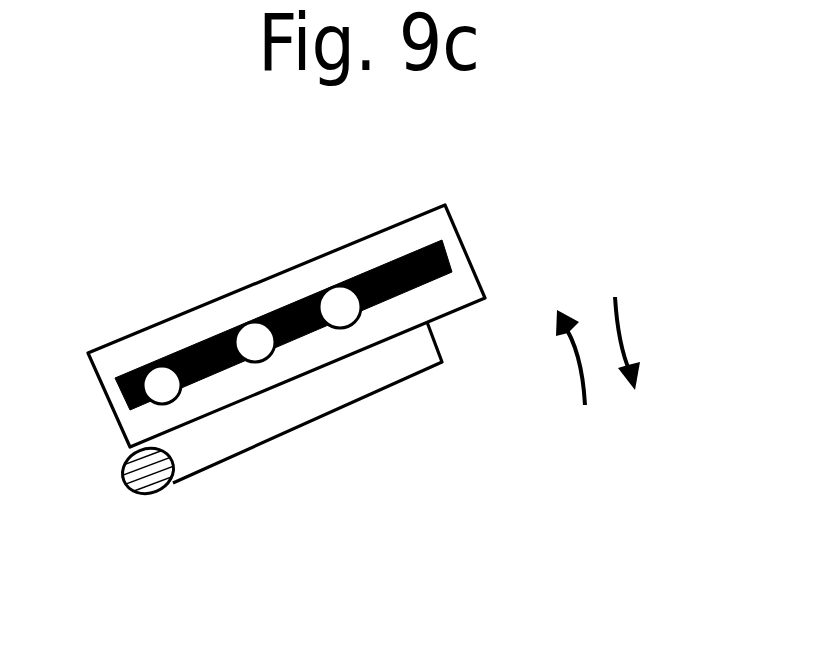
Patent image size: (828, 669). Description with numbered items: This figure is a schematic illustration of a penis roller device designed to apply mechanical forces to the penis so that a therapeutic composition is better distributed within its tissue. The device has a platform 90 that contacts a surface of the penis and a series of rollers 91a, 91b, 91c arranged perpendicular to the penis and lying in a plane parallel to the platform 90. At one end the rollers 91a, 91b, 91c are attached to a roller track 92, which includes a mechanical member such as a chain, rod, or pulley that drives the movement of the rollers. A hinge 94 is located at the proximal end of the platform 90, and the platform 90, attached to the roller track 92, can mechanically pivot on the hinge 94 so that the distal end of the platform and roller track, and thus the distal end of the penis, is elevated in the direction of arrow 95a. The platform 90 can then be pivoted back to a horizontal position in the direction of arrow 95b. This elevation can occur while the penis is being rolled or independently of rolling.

The platform 90 is at (373, 378).
The roller 91a is at (160, 380).
The roller 91b is at (260, 337).
The roller 91c is at (342, 302).
The roller track 92 is at (434, 232).
The hinge 94 is at (165, 491).
The arrow 95a is at (582, 380).
The arrow 95b is at (635, 321).